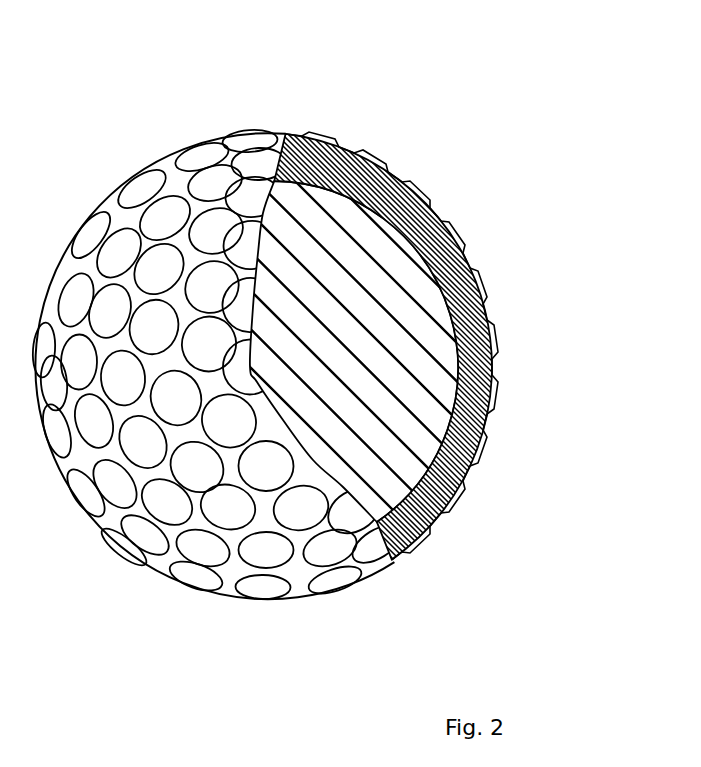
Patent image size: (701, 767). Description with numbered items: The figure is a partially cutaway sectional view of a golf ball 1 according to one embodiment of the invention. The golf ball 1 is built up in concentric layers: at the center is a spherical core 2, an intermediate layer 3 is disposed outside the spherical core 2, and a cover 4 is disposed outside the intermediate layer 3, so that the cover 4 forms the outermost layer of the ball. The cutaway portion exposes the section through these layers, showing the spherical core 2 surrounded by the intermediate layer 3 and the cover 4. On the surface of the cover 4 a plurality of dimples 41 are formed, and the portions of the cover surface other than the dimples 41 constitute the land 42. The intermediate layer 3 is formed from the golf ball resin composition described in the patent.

The golf ball 1 is at (315, 351).
The spherical core 2 is at (396, 414).
The intermediate layer 3 is at (466, 267).
The cover 4 is at (433, 217).
The dimples 41 is at (301, 138).
The land 42 is at (349, 146).